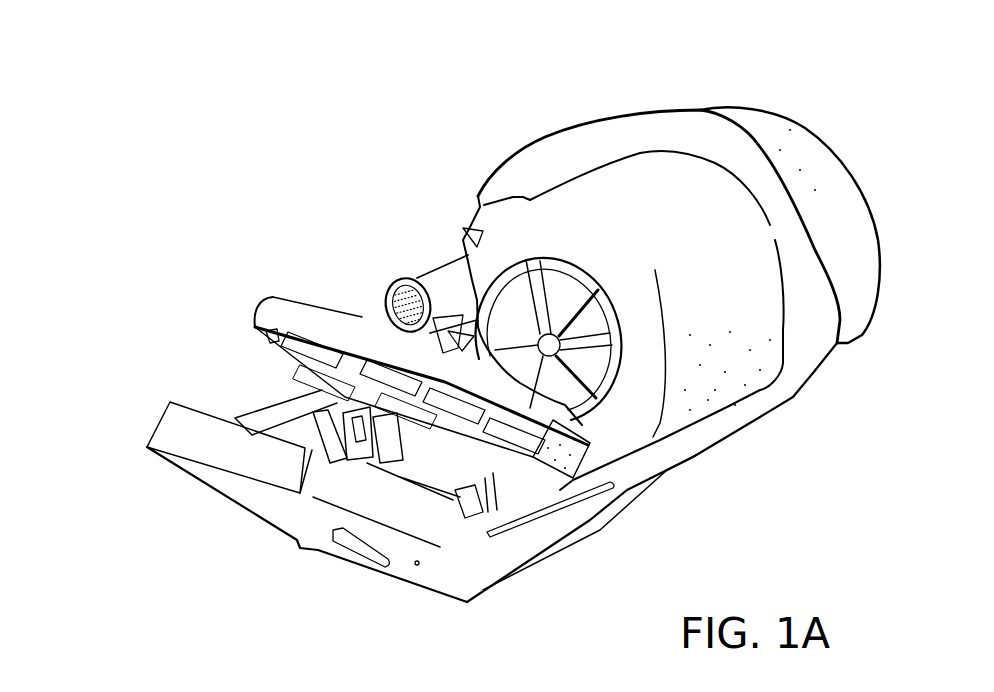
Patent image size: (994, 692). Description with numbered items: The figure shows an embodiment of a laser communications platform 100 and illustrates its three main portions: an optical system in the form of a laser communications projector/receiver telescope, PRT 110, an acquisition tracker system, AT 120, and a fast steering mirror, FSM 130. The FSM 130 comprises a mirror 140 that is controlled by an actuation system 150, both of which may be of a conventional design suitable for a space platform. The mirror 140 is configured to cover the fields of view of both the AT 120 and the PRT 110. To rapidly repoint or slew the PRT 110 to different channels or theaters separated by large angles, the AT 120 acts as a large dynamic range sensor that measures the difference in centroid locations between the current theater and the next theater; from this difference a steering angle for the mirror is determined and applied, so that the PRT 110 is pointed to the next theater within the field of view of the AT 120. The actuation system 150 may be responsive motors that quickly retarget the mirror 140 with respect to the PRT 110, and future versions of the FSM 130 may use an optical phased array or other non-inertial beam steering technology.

The laser communications platform 100 is at (487, 73).
The laser communications projector/receiver telescope (PRT) 110 is at (674, 110).
The acquisition tracker system (AT) 120 is at (317, 128).
The fast steering mirror (FSM) 130 is at (145, 215).
The mirror 140 is at (537, 480).
The actuation system 150 is at (477, 495).